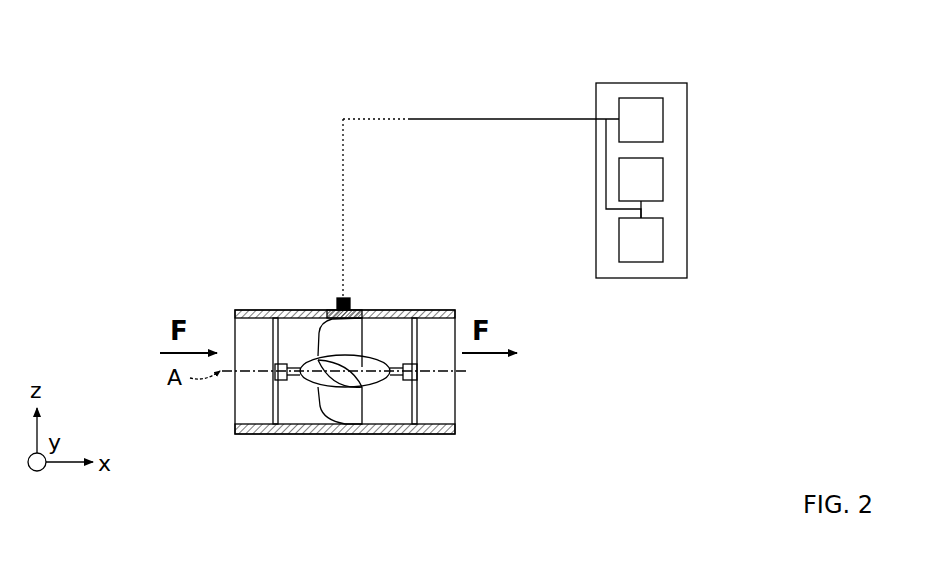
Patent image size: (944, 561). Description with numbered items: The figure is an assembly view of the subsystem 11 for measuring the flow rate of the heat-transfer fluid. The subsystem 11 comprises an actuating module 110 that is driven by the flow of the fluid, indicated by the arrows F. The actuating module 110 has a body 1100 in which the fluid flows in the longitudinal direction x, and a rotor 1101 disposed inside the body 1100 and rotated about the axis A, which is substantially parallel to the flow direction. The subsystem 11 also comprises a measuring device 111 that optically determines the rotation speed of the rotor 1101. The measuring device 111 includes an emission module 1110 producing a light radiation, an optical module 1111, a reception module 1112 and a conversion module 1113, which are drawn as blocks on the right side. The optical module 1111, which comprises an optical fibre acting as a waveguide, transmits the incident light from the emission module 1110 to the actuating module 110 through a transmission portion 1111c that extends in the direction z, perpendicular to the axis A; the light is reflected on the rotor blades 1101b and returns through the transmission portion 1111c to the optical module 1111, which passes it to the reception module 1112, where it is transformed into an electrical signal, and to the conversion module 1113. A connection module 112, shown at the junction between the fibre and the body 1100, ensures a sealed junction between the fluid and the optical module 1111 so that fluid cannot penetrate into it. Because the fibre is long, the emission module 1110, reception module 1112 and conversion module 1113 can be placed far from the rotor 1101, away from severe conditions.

The subsystem for measuring the flow rate 11 is at (165, 103).
The actuating module 110 is at (162, 276).
The body 1100 is at (354, 426).
The rotor 1101 is at (310, 342).
The rotor blades 1101b is at (358, 346).
The connection module 112 is at (346, 297).
The transmission portion 1111c is at (318, 308).
The measuring device 111 is at (425, 80).
The optical module 1111 is at (448, 119).
The emission module 1110 is at (656, 120).
The reception module 1112 is at (656, 188).
The conversion module 1113 is at (656, 248).